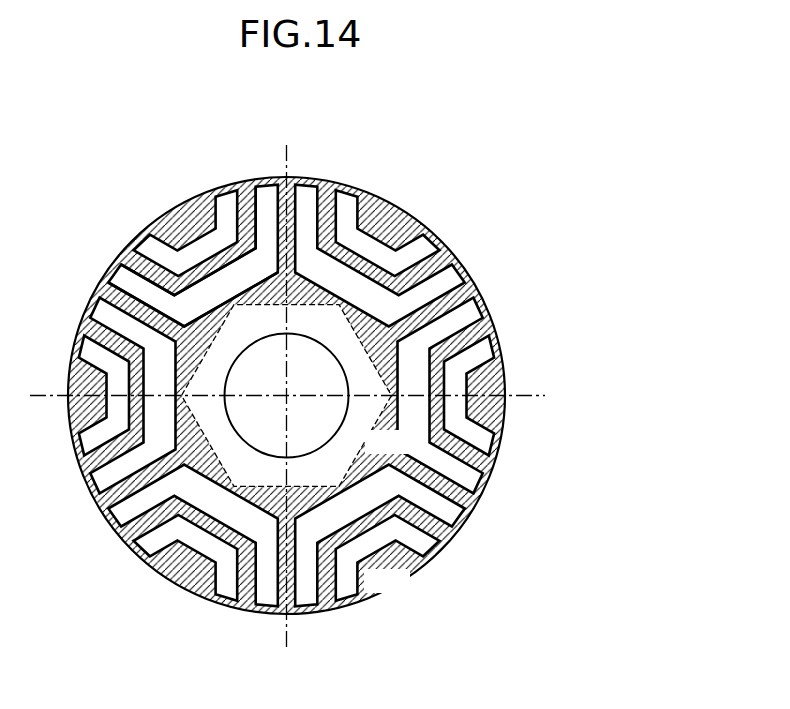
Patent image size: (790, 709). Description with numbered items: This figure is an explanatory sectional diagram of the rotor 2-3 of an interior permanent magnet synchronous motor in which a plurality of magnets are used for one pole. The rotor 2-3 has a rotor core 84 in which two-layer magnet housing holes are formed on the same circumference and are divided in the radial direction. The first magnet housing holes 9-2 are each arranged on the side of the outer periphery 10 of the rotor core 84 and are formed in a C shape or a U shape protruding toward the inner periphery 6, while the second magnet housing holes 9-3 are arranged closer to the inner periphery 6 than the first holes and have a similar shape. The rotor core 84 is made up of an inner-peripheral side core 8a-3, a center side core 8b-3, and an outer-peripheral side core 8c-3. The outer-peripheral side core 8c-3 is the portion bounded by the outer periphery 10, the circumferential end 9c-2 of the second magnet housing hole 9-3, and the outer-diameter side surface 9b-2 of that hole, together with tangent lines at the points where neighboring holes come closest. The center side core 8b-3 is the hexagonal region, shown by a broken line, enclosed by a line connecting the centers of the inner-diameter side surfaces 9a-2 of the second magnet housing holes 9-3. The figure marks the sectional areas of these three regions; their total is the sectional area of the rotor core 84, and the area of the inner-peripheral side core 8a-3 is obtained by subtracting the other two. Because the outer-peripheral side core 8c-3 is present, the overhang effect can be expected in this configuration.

The rotor 2-3 is at (459, 211).
The outer periphery 10 is at (323, 183).
The first magnet housing hole 9-2 is at (198, 245).
The inner-diameter side surface 9a-2 is at (160, 321).
The outer-diameter side surface 9b-2 is at (250, 244).
The circumferential end 9c-2 is at (263, 183).
The second magnet housing hole 9-3 is at (122, 271).
The inner periphery 6 is at (233, 428).
The inner-peripheral side core 8a-3 is at (405, 453).
The center side core 8b-3 is at (392, 420).
The outer-peripheral side core 8c-3 is at (410, 558).
The rotor core 84 is at (603, 460).